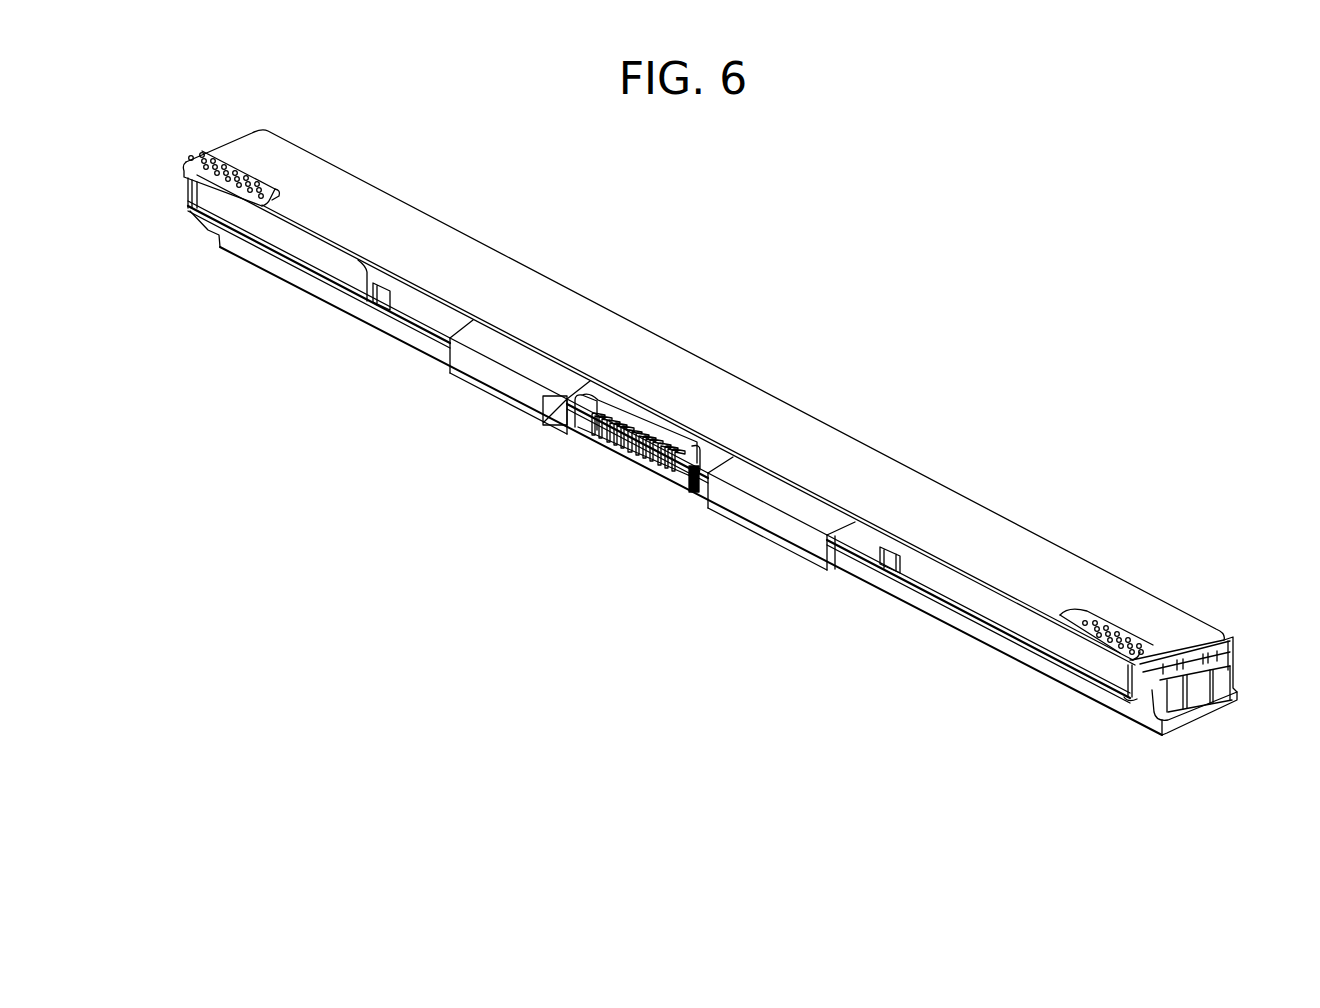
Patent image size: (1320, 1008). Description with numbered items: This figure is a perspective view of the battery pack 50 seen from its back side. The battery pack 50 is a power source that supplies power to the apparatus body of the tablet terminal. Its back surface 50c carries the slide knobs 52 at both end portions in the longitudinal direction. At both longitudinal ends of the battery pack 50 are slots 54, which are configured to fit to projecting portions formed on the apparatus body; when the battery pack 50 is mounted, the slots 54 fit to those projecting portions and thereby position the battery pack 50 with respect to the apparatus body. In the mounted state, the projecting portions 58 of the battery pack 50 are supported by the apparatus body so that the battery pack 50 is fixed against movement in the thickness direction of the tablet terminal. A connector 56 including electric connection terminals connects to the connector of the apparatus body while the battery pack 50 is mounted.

The battery pack 50 is at (462, 118).
The back surface 50c is at (628, 343).
The slide knob 52 is at (186, 178).
The slot 54 is at (1168, 690).
The connector 56 is at (580, 456).
The projecting portion 58 is at (481, 371).